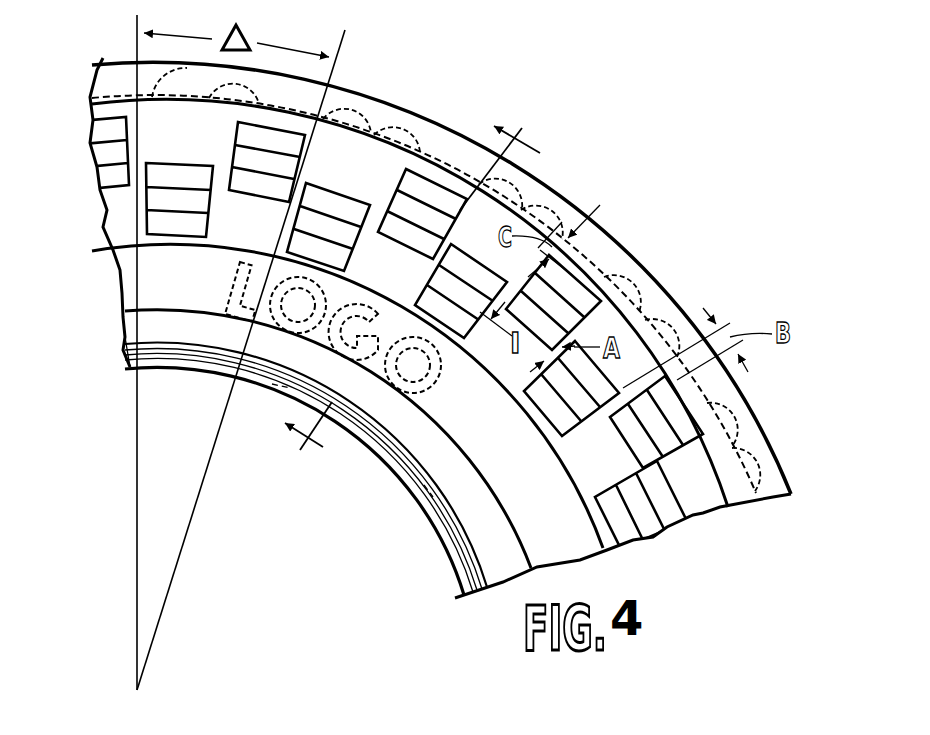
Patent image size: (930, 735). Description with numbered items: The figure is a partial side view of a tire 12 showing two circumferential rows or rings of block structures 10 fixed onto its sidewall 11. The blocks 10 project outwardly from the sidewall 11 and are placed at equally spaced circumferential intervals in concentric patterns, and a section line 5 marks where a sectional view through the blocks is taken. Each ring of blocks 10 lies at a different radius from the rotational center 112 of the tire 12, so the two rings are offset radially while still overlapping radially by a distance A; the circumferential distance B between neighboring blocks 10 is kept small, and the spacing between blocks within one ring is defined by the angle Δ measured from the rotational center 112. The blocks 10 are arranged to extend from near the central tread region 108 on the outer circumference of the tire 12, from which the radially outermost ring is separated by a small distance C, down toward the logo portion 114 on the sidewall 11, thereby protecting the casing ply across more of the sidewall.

The block structure 10 is at (335, 205).
The sidewall 11 is at (163, 138).
The tire 12 is at (655, 219).
The central tread region 108 is at (563, 213).
The rotational center 112 is at (132, 687).
The logo portion 114 is at (190, 292).
The section line 5- 5 is at (414, 291).